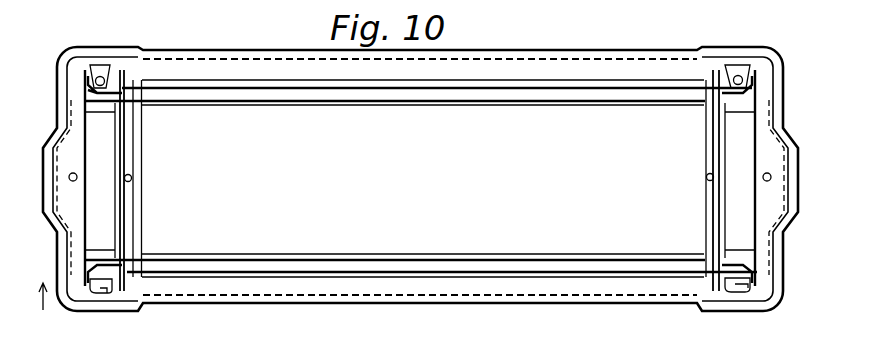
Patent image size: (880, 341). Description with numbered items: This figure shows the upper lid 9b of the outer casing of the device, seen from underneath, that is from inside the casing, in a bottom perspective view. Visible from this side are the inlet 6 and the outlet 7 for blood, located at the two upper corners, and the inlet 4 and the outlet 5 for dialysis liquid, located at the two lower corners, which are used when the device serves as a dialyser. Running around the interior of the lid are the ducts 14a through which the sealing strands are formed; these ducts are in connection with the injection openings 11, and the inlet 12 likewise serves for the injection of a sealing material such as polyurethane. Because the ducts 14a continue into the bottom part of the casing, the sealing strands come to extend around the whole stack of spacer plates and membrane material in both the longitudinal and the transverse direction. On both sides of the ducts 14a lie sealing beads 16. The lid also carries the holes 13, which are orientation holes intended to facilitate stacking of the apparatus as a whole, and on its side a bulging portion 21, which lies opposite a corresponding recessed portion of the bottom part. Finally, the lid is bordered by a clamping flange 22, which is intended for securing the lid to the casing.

The inlet for dialysate 4 is at (750, 287).
The outlet for dialysate 5 is at (112, 287).
The inlet for blood 6 is at (100, 77).
The outlet for blood 7 is at (740, 76).
The upper lid 9b is at (606, 127).
The injection opening for sealing material 11 is at (132, 178).
The inlet for injection of sealing material 12 is at (72, 182).
The orientation holes 13 is at (76, 169).
The ducts 14a is at (402, 92).
The sealing beads 16 is at (234, 82).
The bulging portion 21 is at (44, 312).
The clamping flange 22 is at (530, 58).